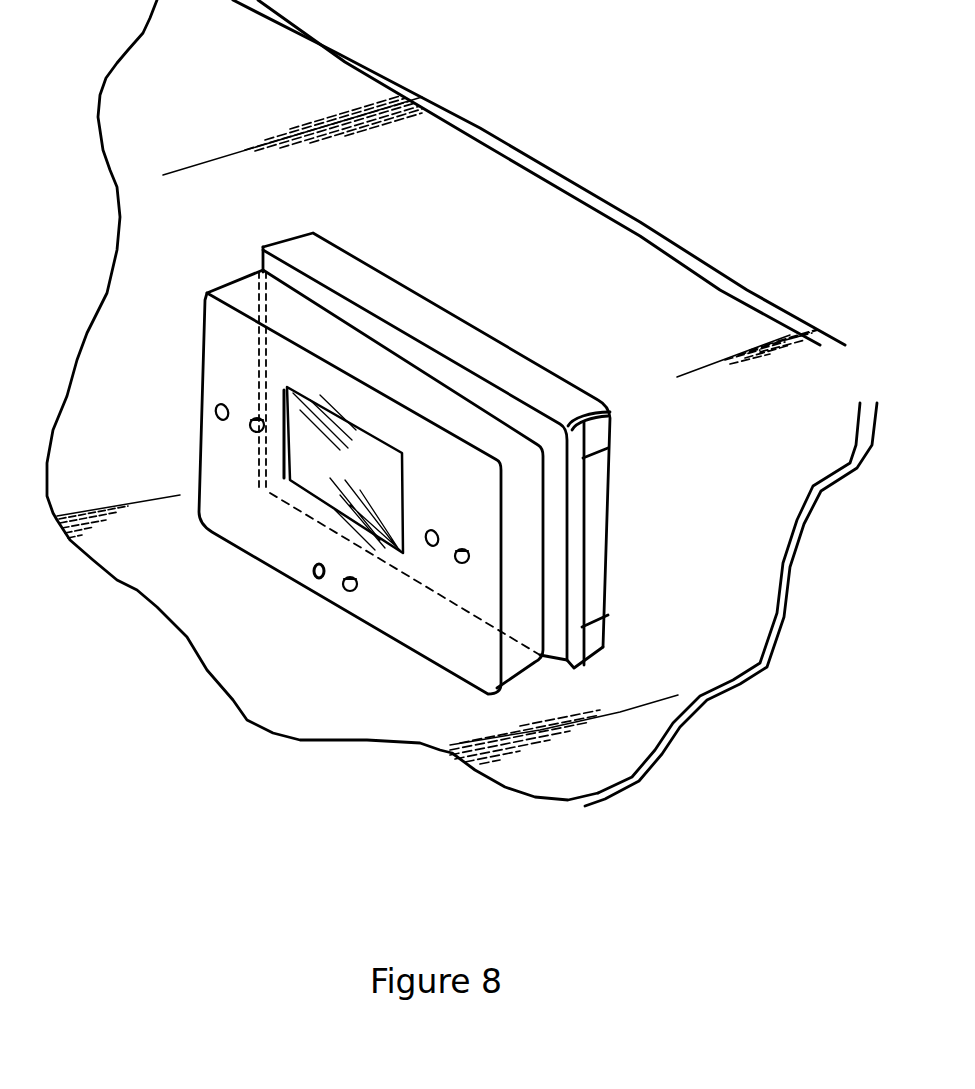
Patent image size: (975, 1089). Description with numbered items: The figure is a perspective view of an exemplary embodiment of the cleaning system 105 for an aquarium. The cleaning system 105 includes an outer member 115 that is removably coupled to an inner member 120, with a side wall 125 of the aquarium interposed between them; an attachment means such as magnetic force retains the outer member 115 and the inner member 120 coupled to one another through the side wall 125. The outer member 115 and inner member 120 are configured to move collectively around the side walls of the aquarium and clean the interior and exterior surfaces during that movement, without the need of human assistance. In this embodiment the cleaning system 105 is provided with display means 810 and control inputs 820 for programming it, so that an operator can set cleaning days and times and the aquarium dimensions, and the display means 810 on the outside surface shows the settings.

The cleaning system 105 is at (757, 447).
The side wall 125 is at (573, 183).
The inner member 120 is at (535, 383).
The outer member 115 is at (403, 616).
The display means 810 is at (325, 473).
The control inputs 820 is at (214, 412).